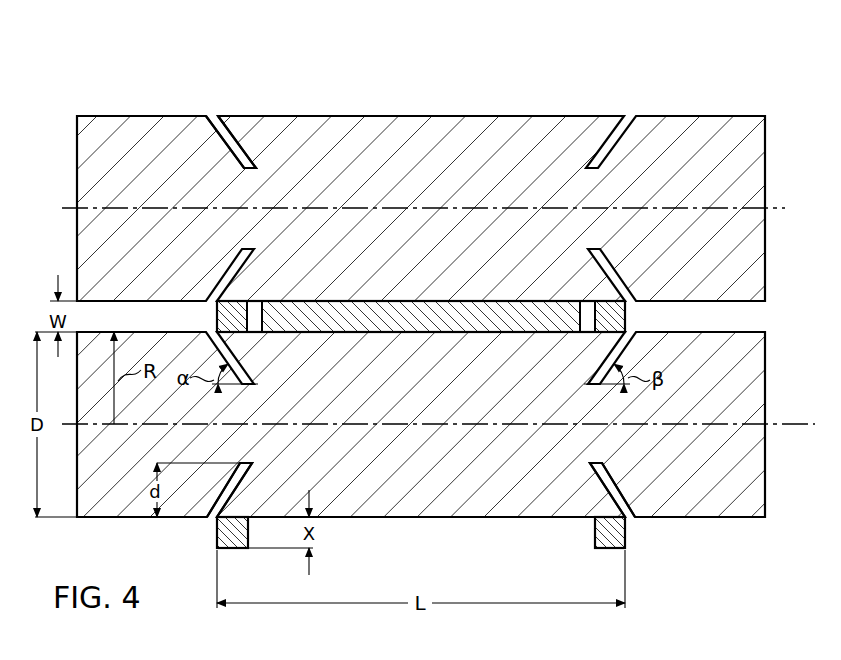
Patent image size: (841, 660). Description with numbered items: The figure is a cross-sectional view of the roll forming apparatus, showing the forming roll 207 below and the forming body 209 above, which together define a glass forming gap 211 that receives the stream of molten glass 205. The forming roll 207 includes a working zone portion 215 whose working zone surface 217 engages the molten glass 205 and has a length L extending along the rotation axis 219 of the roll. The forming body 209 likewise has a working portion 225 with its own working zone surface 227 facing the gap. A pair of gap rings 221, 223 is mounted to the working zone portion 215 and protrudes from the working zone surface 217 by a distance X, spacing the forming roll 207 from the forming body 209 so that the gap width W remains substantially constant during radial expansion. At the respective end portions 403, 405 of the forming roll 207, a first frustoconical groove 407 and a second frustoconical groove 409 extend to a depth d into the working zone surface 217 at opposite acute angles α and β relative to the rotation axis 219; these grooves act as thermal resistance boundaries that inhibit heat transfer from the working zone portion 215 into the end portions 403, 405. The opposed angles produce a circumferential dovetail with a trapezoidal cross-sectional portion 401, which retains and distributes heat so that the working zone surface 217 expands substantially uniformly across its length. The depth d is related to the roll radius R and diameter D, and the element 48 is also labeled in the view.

The lower component 48 is at (435, 493).
The stream of molten glass 205 is at (470, 316).
The forming roll 207 is at (767, 500).
The forming body 209 is at (737, 116).
The glass forming gap 211 is at (768, 316).
The working zone portion 215 is at (407, 542).
The working zone surface 217 is at (502, 519).
The rotation axis 219 is at (793, 424).
The gap ring 221 is at (249, 533).
The gap ring 223 is at (595, 532).
The working portion 225 is at (434, 103).
The working zone surface 227 is at (302, 115).
The trapezoidal cross-sectional portion 401 is at (344, 510).
The end portion 403 is at (92, 518).
The end portion 405 is at (750, 518).
The first frustoconical groove 407 is at (208, 521).
The second frustoconical groove 409 is at (633, 522).